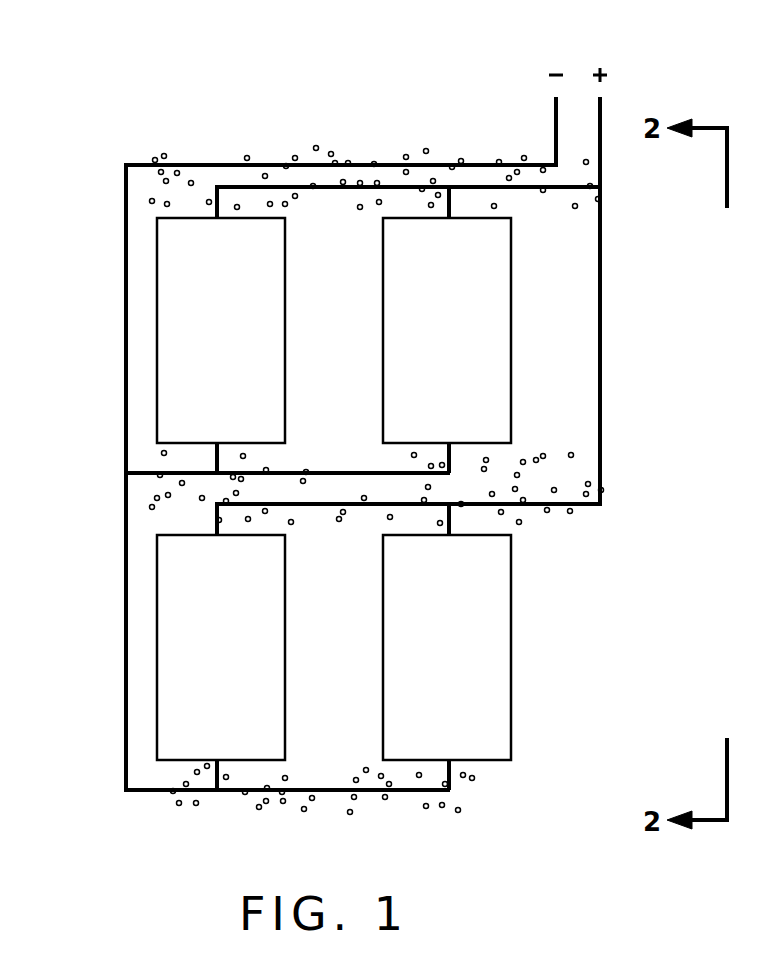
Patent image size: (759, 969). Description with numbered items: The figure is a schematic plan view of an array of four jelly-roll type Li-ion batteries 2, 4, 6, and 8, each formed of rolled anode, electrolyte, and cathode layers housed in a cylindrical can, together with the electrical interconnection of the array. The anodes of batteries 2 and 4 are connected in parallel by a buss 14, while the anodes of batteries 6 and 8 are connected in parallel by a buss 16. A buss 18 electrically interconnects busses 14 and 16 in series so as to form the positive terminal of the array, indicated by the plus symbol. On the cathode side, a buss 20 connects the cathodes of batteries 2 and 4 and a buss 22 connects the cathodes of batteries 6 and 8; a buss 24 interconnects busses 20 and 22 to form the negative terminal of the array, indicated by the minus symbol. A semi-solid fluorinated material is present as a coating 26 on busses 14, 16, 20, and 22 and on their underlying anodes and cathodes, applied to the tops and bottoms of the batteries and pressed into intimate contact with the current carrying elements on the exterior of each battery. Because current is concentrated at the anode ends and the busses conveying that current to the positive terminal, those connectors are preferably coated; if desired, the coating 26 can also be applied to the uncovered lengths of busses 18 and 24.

The Li-ion battery 2 is at (463, 349).
The Li-ion battery 4 is at (236, 349).
The Li-ion battery 6 is at (463, 665).
The Li-ion battery 8 is at (236, 665).
The buss 14 is at (357, 187).
The buss 16 is at (575, 505).
The buss 18 is at (600, 305).
The buss 20 is at (145, 473).
The buss 22 is at (145, 792).
The buss 24 is at (126, 307).
The coating 26 is at (200, 155).